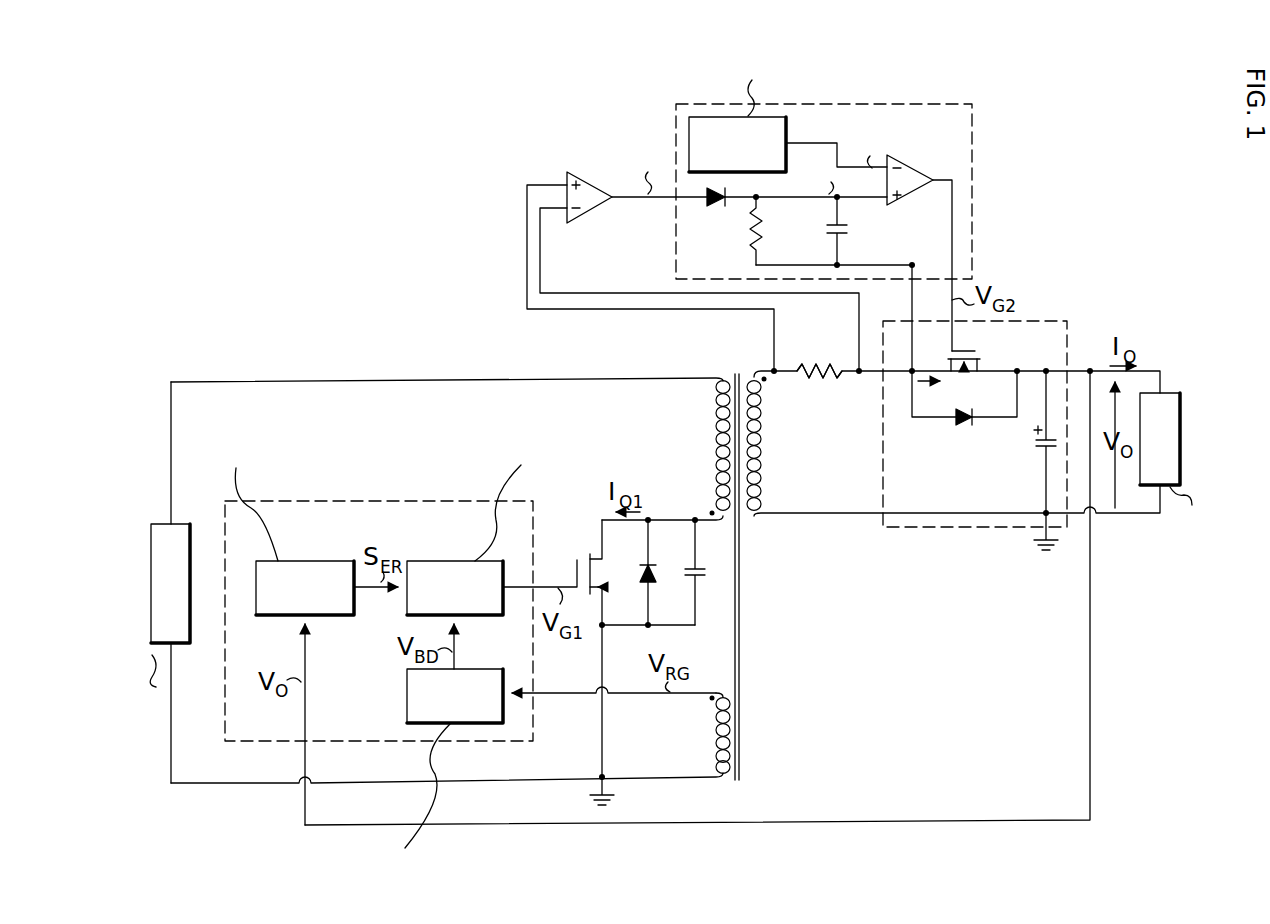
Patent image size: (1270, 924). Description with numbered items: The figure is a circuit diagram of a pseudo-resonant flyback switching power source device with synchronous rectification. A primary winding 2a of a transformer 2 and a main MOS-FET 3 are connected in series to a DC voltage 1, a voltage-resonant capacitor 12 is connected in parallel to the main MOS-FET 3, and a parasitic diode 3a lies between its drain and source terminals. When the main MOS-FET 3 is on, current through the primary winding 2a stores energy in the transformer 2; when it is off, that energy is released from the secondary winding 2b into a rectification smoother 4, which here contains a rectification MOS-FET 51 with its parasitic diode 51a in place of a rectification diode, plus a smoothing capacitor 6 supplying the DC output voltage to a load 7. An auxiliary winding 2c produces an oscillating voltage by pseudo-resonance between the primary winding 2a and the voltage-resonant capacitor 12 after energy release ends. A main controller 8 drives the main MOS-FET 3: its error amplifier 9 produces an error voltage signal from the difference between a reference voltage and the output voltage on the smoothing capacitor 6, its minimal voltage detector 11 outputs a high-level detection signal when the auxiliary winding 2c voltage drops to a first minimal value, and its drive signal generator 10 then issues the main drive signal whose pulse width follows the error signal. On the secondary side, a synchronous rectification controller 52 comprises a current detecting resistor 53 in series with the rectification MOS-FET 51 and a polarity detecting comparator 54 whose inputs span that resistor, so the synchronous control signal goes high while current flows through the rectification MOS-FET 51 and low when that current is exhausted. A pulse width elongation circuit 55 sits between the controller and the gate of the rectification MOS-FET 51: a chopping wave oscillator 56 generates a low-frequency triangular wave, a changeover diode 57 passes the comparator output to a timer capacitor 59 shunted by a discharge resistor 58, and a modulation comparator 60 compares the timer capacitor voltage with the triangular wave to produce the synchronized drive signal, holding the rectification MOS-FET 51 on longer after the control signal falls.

The DC voltage 1 is at (165, 524).
The transformer 2 is at (738, 546).
The primary winding 2a is at (716, 447).
The secondary winding 2b is at (762, 450).
The auxiliary winding 2c is at (715, 735).
The main MOS-FET 3 is at (582, 558).
The parasitic diode 3a is at (642, 580).
The rectification smoother 4 is at (972, 532).
The smoothing capacitor 6 is at (1040, 445).
The load 7 is at (1175, 392).
The main controller 8 is at (382, 499).
The error amplifier 9 is at (305, 561).
The drive signal generator 10 is at (455, 561).
The minimal voltage detector 11 is at (407, 697).
The voltage-resonant capacitor 12 is at (684, 565).
The rectification MOS-FET 51 is at (980, 357).
The parasitic diode 51a is at (963, 424).
The synchronous rectification controller 52 is at (779, 186).
The current detecting resistor 53 is at (820, 364).
The polarity detecting comparator 54 is at (597, 181).
The pulse width elongation circuit 55 is at (980, 189).
The chopping wave oscillator 56 is at (786, 125).
The changeover diode 57 is at (718, 206).
The discharge resistor 58 is at (763, 235).
The timer capacitor 59 is at (848, 232).
The modulation comparator 60 is at (914, 166).